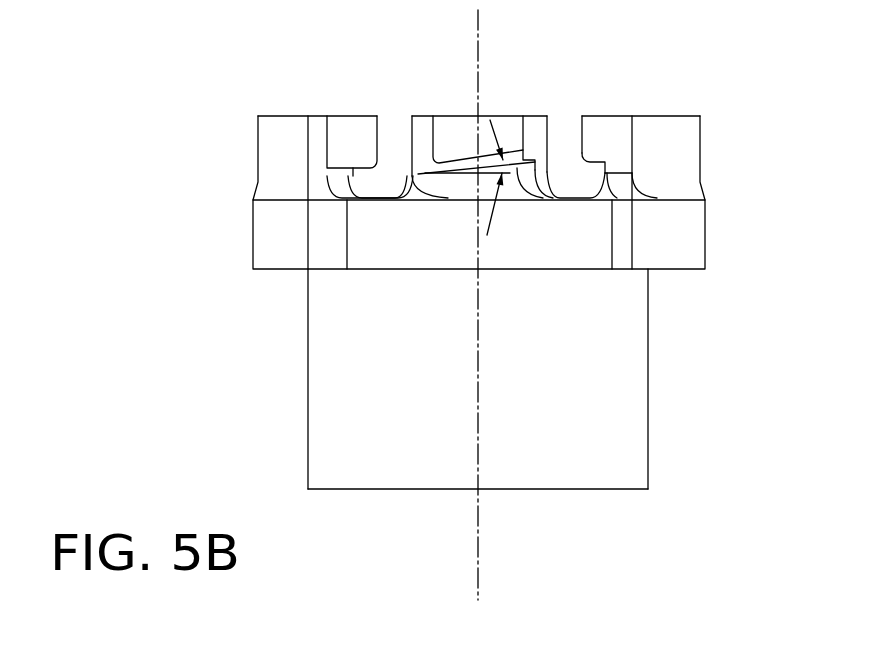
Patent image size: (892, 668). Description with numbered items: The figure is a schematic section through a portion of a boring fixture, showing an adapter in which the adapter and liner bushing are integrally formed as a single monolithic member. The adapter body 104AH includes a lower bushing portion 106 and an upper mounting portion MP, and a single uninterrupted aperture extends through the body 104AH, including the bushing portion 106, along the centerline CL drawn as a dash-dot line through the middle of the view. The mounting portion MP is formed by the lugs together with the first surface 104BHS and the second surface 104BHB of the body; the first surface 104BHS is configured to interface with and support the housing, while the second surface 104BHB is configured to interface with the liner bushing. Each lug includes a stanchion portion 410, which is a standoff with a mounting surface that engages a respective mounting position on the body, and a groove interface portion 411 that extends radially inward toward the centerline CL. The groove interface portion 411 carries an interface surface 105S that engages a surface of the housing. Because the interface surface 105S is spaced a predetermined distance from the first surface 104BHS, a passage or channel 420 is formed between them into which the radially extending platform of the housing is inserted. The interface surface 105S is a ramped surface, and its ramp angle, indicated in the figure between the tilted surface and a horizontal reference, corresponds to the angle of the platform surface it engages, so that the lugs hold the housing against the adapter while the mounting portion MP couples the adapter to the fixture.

The mounting portion MP is at (257, 130).
The centerline CL is at (480, 65).
The first surface 104BHS is at (510, 173).
The second surface 104BHB is at (280, 270).
The body 104AH is at (673, 225).
The interface surface 105S is at (540, 182).
The groove interface portion 411 is at (603, 135).
The stanchion portion 410 is at (617, 180).
The channel 420 is at (552, 202).
The bushing portion 106 is at (390, 447).